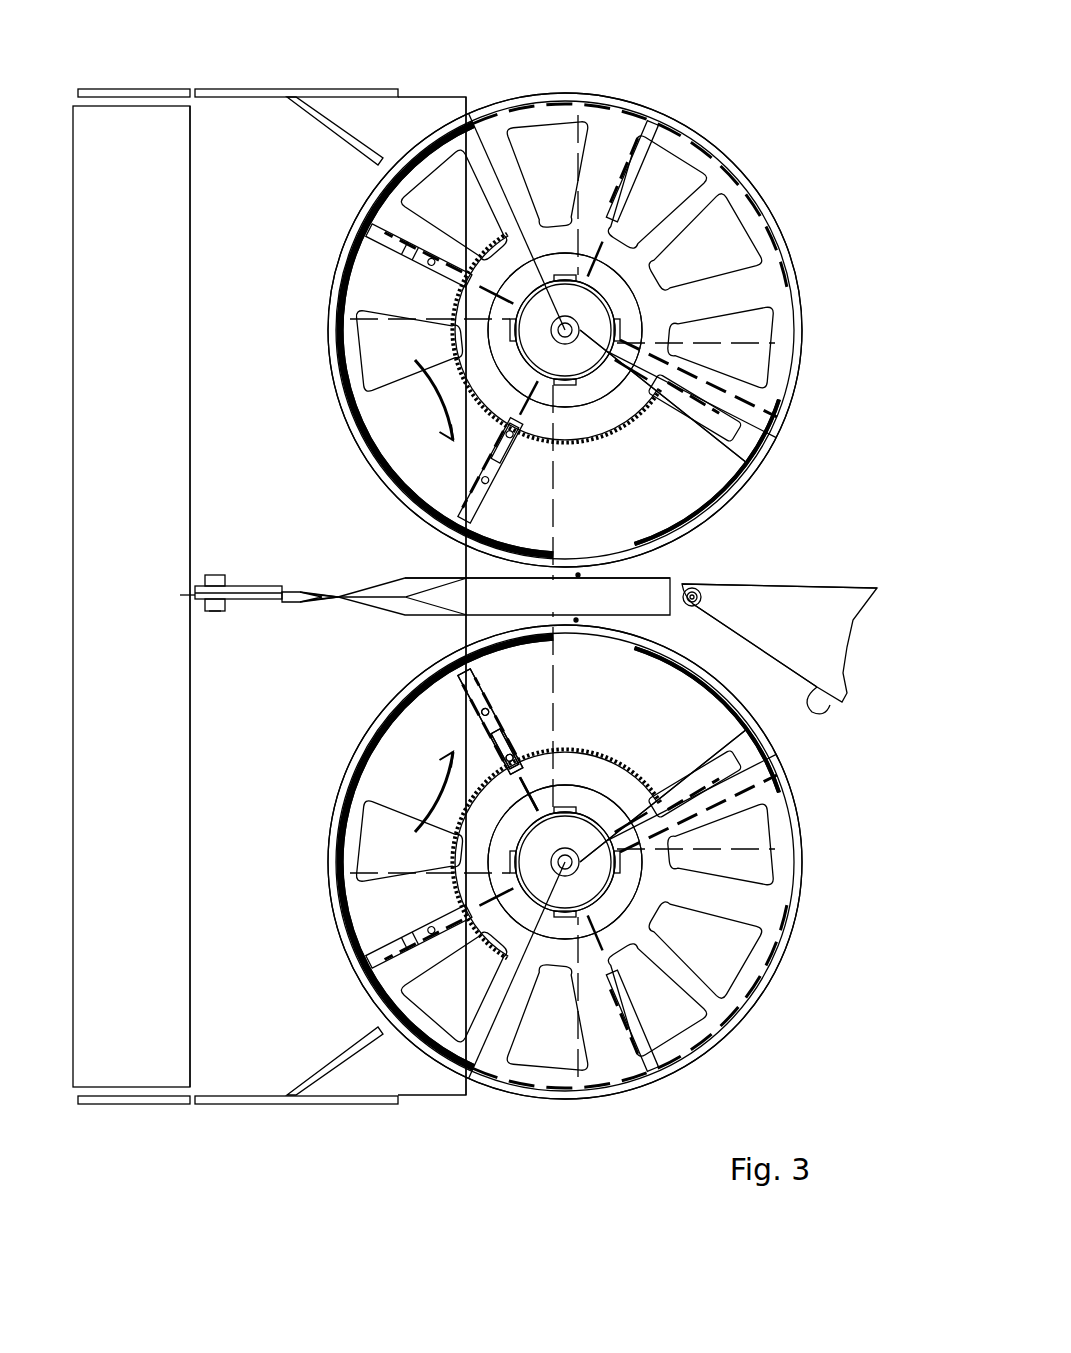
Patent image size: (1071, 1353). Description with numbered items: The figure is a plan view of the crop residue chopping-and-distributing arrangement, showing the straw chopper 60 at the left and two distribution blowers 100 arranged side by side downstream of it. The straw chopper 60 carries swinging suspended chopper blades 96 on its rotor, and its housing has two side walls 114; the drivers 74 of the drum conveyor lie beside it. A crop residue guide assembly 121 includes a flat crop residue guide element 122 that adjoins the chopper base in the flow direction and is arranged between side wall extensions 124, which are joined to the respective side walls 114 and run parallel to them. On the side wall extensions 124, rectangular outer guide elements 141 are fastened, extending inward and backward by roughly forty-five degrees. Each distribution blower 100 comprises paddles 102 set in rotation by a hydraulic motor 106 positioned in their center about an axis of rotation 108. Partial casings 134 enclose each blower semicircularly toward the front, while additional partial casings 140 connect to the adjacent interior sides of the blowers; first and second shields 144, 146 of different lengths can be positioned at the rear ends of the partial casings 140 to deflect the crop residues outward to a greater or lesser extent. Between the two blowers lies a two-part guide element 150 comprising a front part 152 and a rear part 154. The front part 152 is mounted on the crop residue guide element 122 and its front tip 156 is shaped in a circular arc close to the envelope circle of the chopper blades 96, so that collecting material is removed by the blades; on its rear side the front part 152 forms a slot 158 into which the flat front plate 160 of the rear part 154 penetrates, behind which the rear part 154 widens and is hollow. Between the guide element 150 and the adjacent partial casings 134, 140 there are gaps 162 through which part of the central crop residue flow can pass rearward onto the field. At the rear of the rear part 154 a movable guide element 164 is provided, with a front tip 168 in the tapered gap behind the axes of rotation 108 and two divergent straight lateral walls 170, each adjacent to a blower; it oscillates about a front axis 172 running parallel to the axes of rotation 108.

The straw chopper 60 is at (206, 716).
The drivers 74 is at (195, 437).
The chopper blades 96 is at (262, 586).
The distribution blowers 100 is at (800, 248).
The paddles 102 is at (512, 727).
The hydraulic motor 106 is at (607, 247).
The axis of rotation 108 is at (585, 305).
The side walls 114 is at (125, 88).
The crop residue guide assembly 121 is at (398, 1112).
The crop residue guide element 122 is at (222, 278).
The side wall extensions 124 is at (235, 95).
The partial casings 134 is at (340, 347).
The partial casings 140 is at (690, 545).
The outer guide elements 141 is at (355, 150).
The first shield 144 is at (485, 110).
The second shield 146 is at (762, 465).
The guide element 150 is at (666, 578).
The front part 152 is at (318, 590).
The rear part 154 is at (428, 578).
The front tip 156 is at (270, 600).
The slot 158 is at (322, 603).
The front plate 160 is at (328, 592).
The gaps 162 is at (578, 573).
The movable guide element 164 is at (820, 598).
The front tip 168 is at (690, 588).
The lateral walls 170 is at (782, 590).
The front axis 172 is at (700, 600).